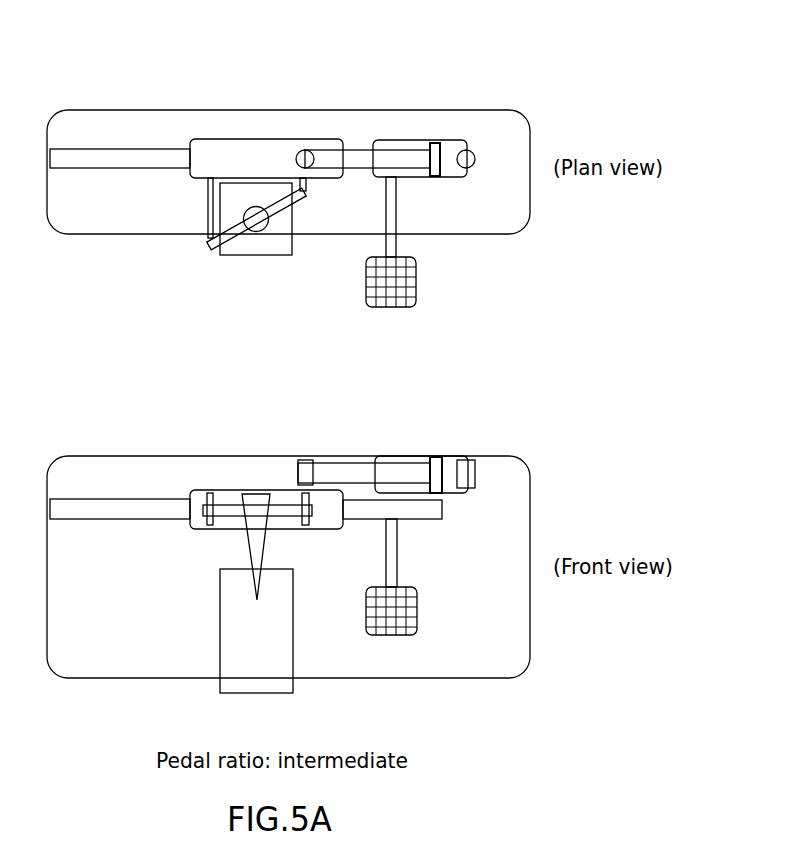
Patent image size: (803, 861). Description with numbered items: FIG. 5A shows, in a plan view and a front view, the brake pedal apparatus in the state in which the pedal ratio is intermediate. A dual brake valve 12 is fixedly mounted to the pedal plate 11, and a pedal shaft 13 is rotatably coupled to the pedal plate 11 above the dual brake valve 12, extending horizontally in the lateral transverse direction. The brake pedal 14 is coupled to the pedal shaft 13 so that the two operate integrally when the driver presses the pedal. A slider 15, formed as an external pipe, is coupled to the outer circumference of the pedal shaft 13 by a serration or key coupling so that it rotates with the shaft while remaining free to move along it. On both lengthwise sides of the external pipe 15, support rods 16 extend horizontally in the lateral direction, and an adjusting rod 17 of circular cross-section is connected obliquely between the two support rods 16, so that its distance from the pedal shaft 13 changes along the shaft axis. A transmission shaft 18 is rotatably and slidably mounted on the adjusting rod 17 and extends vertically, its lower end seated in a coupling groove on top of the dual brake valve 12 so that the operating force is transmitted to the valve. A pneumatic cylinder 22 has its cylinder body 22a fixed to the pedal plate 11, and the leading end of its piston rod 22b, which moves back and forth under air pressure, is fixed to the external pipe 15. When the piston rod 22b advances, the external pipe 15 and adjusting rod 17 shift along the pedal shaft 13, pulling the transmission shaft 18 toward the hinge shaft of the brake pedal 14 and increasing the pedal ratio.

The pedal plate 11 is at (135, 118).
The dual brake valve 12 is at (233, 257).
The pedal shaft 13 is at (65, 157).
The brake pedal 14 is at (392, 213).
The slider 15 is at (207, 148).
The support rods 16 is at (208, 215).
The adjusting rod 17 is at (279, 212).
The transmission shaft 18 is at (252, 206).
The pneumatic cylinder 22 is at (452, 126).
The cylinder body 22a is at (452, 178).
The piston rod 22b is at (357, 150).